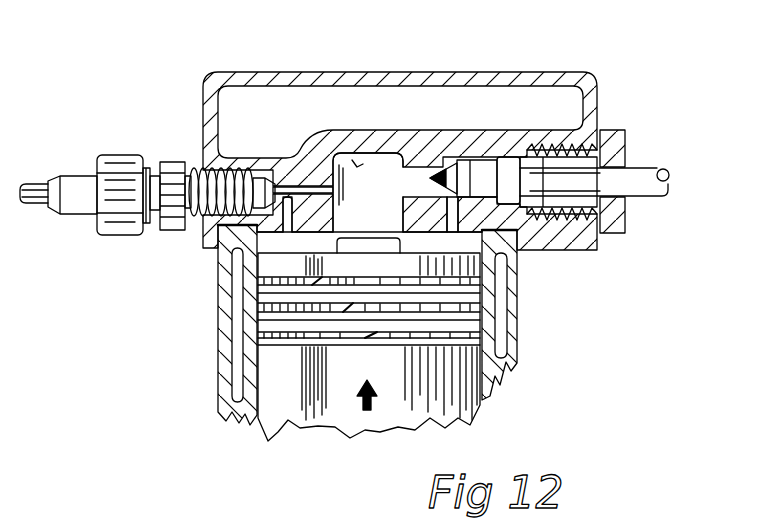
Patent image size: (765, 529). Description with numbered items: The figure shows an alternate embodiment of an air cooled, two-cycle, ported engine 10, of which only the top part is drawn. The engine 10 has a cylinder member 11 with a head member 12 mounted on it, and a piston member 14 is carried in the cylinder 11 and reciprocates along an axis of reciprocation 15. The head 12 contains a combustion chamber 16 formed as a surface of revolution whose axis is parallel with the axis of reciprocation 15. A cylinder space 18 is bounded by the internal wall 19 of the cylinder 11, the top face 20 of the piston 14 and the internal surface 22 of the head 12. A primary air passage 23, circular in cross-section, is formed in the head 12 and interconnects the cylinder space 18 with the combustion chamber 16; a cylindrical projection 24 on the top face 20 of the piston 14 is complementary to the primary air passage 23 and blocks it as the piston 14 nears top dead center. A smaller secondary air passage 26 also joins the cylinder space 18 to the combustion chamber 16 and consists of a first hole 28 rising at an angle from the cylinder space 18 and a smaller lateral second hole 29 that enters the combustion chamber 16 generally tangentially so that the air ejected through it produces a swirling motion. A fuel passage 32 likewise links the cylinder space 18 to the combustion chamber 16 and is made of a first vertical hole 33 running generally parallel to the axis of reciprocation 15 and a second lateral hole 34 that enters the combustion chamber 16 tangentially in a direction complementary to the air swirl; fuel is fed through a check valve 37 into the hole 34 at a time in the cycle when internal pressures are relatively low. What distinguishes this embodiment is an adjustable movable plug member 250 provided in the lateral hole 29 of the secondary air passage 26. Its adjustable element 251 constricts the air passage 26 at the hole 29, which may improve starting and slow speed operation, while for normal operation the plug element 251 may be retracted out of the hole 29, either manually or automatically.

The engine 10 is at (205, 303).
The cylinder member 11 is at (517, 322).
The head member 12 is at (590, 74).
The piston member 14 is at (293, 418).
The axis of reciprocation 15 is at (358, 400).
The combustion chamber 16 is at (355, 158).
The cylinder space 18 is at (272, 242).
The internal wall 19 is at (480, 396).
The top face 20 is at (470, 248).
The internal surface 22 is at (483, 232).
The primary air passage 23 is at (358, 163).
The cylindrical projection 24 is at (360, 238).
The secondary air passage 26 is at (438, 148).
The first hole 28 is at (520, 237).
The lateral second hole 29 is at (413, 183).
The fuel passage 32 is at (278, 172).
The first vertical hole 33 is at (290, 232).
The second lateral hole 34 is at (310, 197).
The check valve 37 is at (106, 142).
The adjustable movable plug member 250 is at (620, 130).
The adjustable element 251 is at (672, 175).